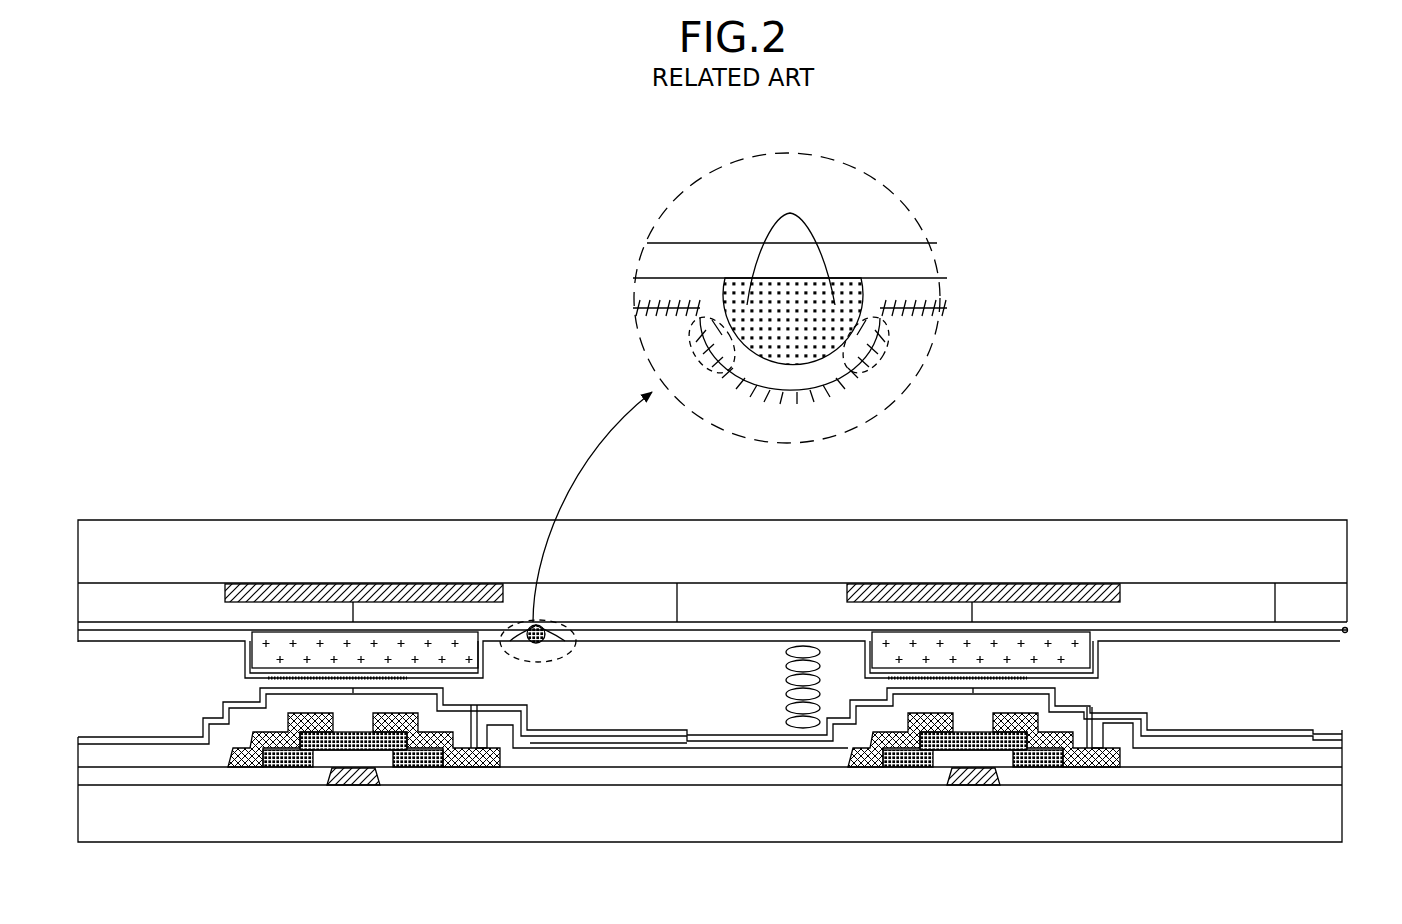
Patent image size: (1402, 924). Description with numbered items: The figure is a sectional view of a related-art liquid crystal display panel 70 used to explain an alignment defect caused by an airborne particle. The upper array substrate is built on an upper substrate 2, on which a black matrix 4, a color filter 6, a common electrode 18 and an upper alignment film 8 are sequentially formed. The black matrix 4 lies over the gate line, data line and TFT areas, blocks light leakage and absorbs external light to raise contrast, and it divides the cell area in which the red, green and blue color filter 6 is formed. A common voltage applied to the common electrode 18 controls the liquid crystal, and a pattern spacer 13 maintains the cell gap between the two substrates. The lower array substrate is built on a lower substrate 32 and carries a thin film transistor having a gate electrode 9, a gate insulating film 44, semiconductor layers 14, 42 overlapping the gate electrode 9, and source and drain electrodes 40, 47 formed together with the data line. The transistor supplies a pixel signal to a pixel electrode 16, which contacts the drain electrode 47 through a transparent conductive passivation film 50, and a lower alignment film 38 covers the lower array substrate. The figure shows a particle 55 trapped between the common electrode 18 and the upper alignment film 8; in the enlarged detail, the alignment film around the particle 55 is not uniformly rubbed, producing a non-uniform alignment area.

The upper substrate 2 is at (1337, 543).
The color filter 6 is at (1335, 598).
The black matrix 4 is at (923, 584).
The common electrode 18 is at (1347, 630).
The upper alignment film 8 is at (1342, 645).
The pattern spacer 13 is at (993, 640).
The particle 55 is at (545, 650).
The liquid crystal display panel 70 is at (1204, 456).
The lower substrate 32 is at (1342, 810).
The gate insulating film 44 is at (680, 780).
The gate electrode 9 is at (353, 786).
The semiconductor layer 14 is at (270, 767).
The source electrode 40 is at (300, 767).
The drain electrode 47 is at (407, 767).
The semiconductor layer 42 is at (460, 767).
The lower alignment film 38 is at (1342, 737).
The pixel electrode 16 is at (527, 750).
The passivation film 50 is at (587, 750).